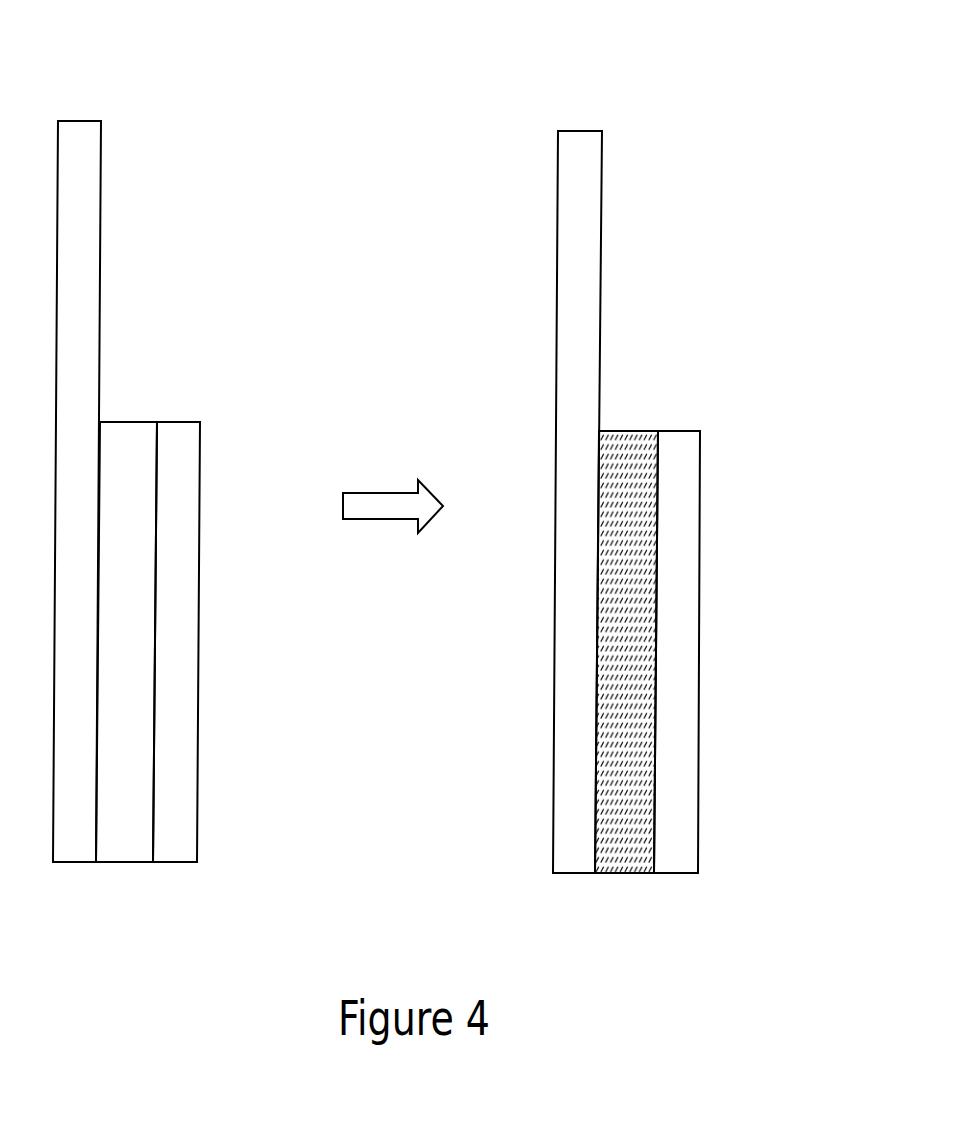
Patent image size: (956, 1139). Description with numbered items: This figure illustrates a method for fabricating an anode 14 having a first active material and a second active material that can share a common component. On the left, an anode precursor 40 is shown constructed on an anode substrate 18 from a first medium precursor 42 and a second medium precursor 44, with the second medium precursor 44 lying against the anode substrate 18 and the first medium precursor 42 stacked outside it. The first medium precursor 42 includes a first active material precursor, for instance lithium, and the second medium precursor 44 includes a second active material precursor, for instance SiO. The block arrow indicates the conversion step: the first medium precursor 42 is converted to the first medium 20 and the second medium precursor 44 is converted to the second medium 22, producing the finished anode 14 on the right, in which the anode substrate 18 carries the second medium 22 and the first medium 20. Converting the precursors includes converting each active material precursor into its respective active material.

The anode 14 is at (691, 564).
The anode substrate 18 is at (102, 123).
The first medium 20 is at (696, 563).
The second medium 22 is at (625, 867).
The anode precursor 40 is at (207, 519).
The first medium precursor 42 is at (190, 555).
The second medium precursor 44 is at (123, 427).